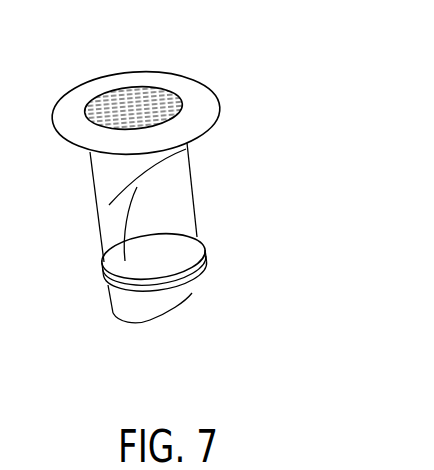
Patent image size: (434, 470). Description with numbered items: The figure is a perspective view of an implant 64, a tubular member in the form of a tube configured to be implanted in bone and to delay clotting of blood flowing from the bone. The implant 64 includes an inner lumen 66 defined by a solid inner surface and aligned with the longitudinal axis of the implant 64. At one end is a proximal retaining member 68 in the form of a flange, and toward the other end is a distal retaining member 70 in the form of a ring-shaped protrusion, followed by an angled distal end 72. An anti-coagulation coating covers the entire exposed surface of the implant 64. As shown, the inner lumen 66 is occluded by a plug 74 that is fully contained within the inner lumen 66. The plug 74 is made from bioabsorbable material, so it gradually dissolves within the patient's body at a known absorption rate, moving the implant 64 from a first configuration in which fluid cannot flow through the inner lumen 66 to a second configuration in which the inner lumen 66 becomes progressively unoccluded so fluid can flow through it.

The implant 64 is at (212, 179).
The inner lumen 66 is at (193, 301).
The proximal retaining member 68 is at (198, 90).
The distal retaining member 70 is at (102, 274).
The angled distal end 72 is at (92, 321).
The plug 74 is at (121, 100).